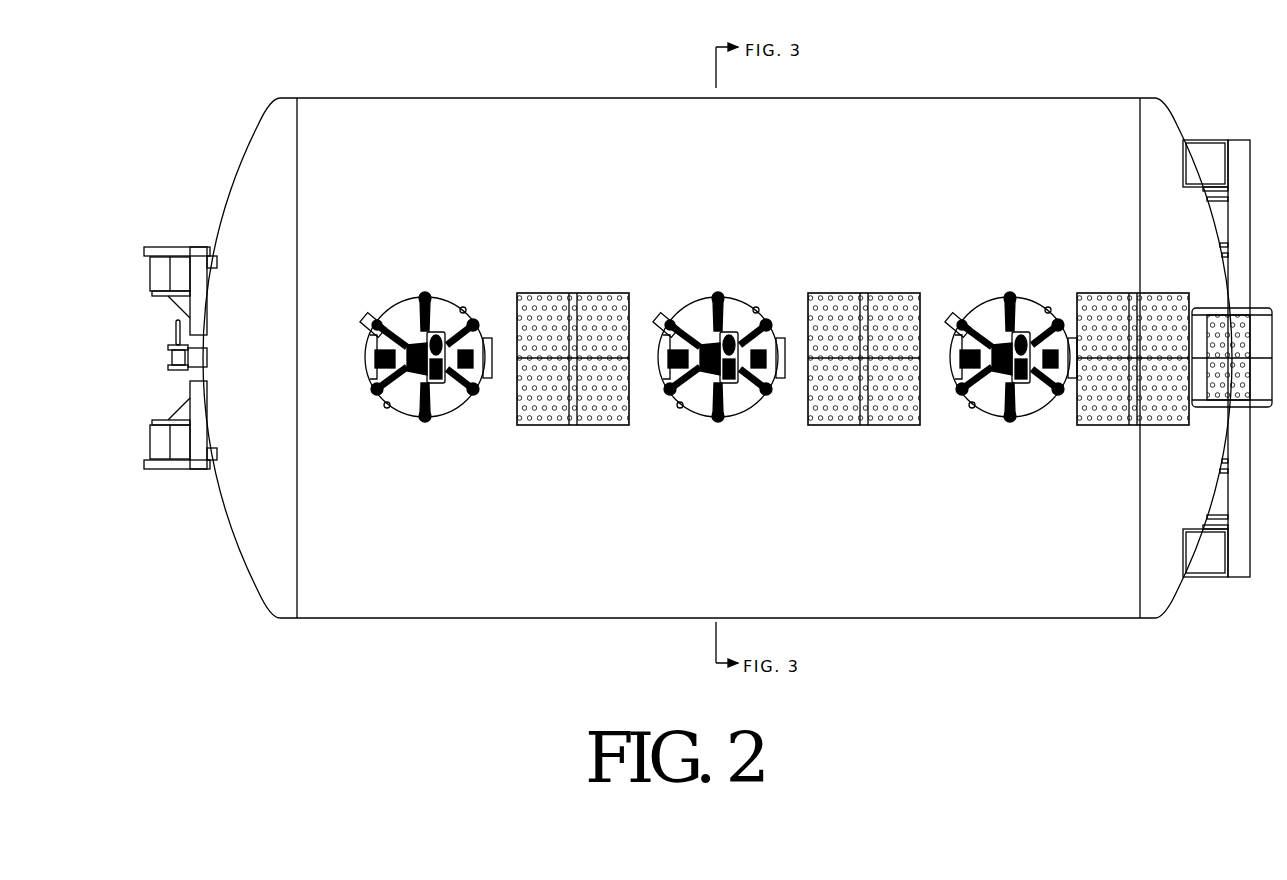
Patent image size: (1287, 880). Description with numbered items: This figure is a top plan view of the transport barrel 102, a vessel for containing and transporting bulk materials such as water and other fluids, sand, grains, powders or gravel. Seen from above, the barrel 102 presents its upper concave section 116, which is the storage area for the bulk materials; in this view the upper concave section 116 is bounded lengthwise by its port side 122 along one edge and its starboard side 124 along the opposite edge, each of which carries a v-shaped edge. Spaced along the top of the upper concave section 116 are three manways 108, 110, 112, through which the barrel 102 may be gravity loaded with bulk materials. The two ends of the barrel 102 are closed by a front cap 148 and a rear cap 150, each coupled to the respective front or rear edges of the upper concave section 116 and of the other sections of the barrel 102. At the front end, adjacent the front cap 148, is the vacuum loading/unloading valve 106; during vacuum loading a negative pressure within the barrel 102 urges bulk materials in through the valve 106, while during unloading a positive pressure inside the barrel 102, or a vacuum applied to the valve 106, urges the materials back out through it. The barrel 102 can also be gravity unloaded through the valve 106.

The barrel 102 is at (332, 97).
The vacuum loading/unloading valve 106 is at (172, 350).
The manway 108 is at (443, 307).
The manway 110 is at (733, 307).
The manway 112 is at (1023, 307).
The upper concave section 116 is at (340, 370).
The port side 122 is at (340, 533).
The starboard side 124 is at (340, 136).
The front cap 148 is at (262, 370).
The rear cap 150 is at (1198, 256).